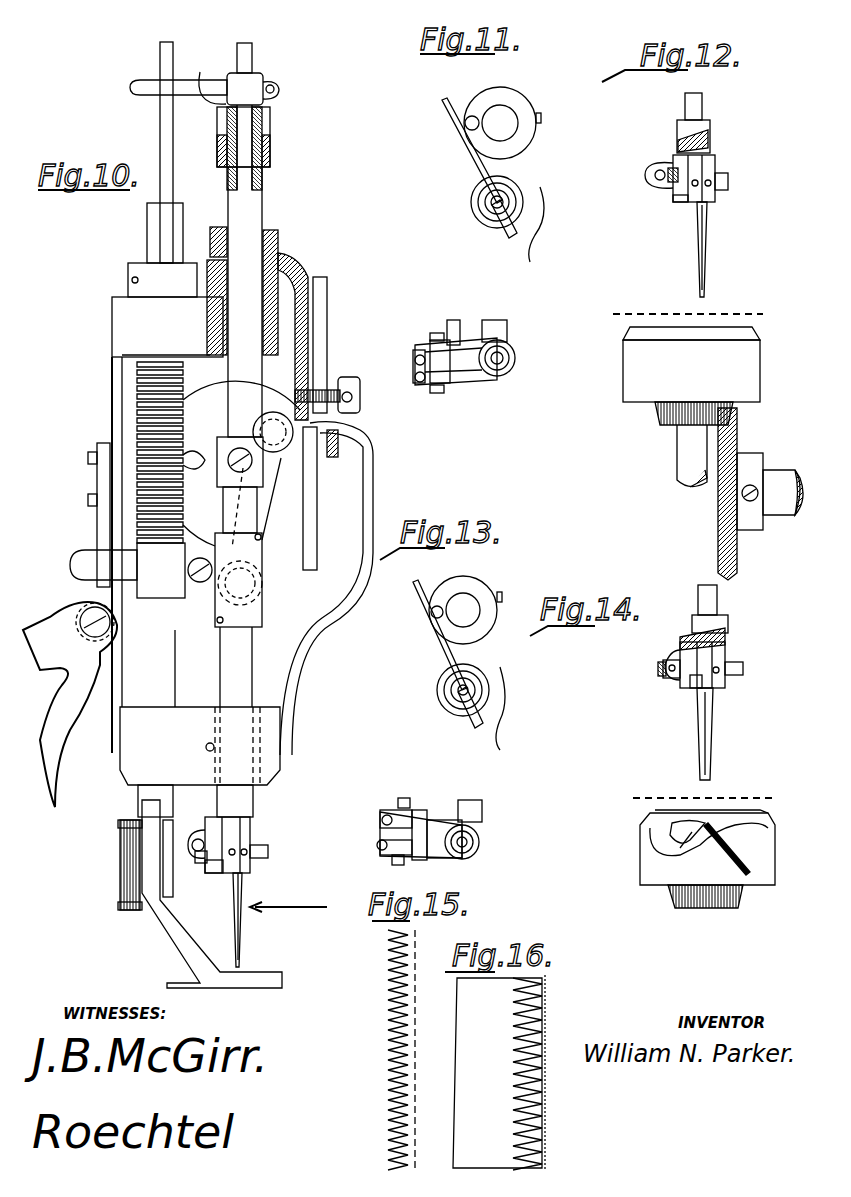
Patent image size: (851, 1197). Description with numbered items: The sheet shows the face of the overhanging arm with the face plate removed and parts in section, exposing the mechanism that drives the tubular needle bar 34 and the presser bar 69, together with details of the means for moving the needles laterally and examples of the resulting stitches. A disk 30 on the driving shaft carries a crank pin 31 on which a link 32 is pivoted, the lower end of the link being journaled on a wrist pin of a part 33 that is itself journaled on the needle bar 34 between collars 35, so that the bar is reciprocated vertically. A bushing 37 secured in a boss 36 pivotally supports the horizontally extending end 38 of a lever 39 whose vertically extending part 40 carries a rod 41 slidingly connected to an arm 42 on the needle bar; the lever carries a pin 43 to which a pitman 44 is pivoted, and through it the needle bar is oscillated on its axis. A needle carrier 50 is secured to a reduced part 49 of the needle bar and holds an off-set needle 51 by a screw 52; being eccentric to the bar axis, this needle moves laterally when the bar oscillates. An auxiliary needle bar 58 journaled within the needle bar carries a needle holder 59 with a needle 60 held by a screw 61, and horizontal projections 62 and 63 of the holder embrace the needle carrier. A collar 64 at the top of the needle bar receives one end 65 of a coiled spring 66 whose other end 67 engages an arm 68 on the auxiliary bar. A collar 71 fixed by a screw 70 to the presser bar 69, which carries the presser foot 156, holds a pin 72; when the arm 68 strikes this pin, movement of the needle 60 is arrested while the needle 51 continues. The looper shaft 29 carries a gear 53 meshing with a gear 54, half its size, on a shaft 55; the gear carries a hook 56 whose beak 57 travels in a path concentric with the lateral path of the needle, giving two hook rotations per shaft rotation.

In FIG. 14, the looper shaft 29 is at (773, 472).
In FIG. 10, the disk 30 is at (218, 454).
In FIG. 10, the crank pin 31 is at (255, 449).
In FIG. 10, the link 32 is at (262, 540).
In FIG. 10, the part 33 is at (235, 585).
In FIG. 10, the tubular needle bar 34 is at (262, 197).
In FIG. 11, the tubular needle bar 34 is at (497, 368).
In FIG. 12, the tubular needle bar 34 is at (710, 135).
In FIG. 14, the tubular needle bar 34 is at (728, 620).
In FIG. 10, the collars 35 is at (220, 525).
In FIG. 10, the boss 36 is at (167, 327).
In FIG. 10, the bushing 37 is at (270, 225).
In FIG. 10, the horizontally extending end 38 is at (280, 253).
In FIG. 10, the lever 39 is at (317, 336).
In FIG. 10, the vertically extending part 40 is at (327, 325).
In FIG. 10, the rod 41 is at (310, 560).
In FIG. 10, the arm 42 is at (262, 503).
In FIG. 10, the pin 43 is at (335, 380).
In FIG. 10, the pitman 44 is at (365, 420).
In FIG. 11, the reduced part 49 is at (515, 358).
In FIG. 13, the reduced part 49 is at (478, 850).
In FIG. 10, the needle carrier 50 is at (225, 808).
In FIG. 12, the needle carrier 50 is at (680, 140).
In FIG. 13, the needle carrier 50 is at (440, 832).
In FIG. 14, the needle carrier 50 is at (725, 632).
In FIG. 10, the needle 51 is at (233, 907).
In FIG. 12, the needle 51 is at (697, 232).
In FIG. 13, the needle 51 is at (380, 818).
In FIG. 14, the needle 51 is at (697, 732).
In FIG. 10, the screw 52 is at (193, 861).
In FIG. 12, the screw 52 is at (658, 185).
In FIG. 13, the screw 52 is at (398, 800).
In FIG. 14, the screw 52 is at (658, 668).
In FIG. 14, the gear 53 is at (740, 553).
In FIG. 14, the gear 54 is at (655, 420).
In FIG. 14, the shaft 55 is at (680, 462).
In FIG. 14, the hook 56 is at (691, 364).
In FIG. 14, the beak 57 is at (707, 847).
In FIG. 10, the auxiliary needle bar 58 is at (252, 58).
In FIG. 11, the auxiliary needle bar 58 is at (505, 195).
In FIG. 12, the auxiliary needle bar 58 is at (702, 100).
In FIG. 13, the auxiliary needle bar 58 is at (472, 680).
In FIG. 14, the auxiliary needle bar 58 is at (698, 592).
In FIG. 10, the needle holder 59 is at (250, 838).
In FIG. 11, the needle holder 59 is at (463, 385).
In FIG. 12, the needle holder 59 is at (715, 162).
In FIG. 13, the needle holder 59 is at (432, 858).
In FIG. 14, the needle holder 59 is at (725, 655).
In FIG. 10, the needle 60 is at (242, 925).
In FIG. 12, the needle 60 is at (708, 245).
In FIG. 13, the needle 60 is at (380, 840).
In FIG. 14, the needle 60 is at (713, 733).
In FIG. 10, the screw 61 is at (268, 855).
In FIG. 12, the screw 61 is at (728, 188).
In FIG. 13, the screw 61 is at (392, 862).
In FIG. 14, the screw 61 is at (743, 668).
In FIG. 11, the horizontal projection 62 is at (450, 340).
In FIG. 12, the horizontal projection 62 is at (670, 160).
In FIG. 13, the horizontal projection 62 is at (420, 812).
In FIG. 14, the horizontal projection 62 is at (680, 645).
In FIG. 10, the horizontal projection 63 is at (210, 868).
In FIG. 11, the horizontal projection 63 is at (460, 325).
In FIG. 12, the horizontal projection 63 is at (672, 200).
In FIG. 14, the horizontal projection 63 is at (692, 688).
In FIG. 10, the collar 64 is at (270, 150).
In FIG. 10, the end 65 is at (262, 133).
In FIG. 11, the end 65 is at (471, 203).
In FIG. 13, the end 65 is at (437, 700).
In FIG. 10, the coiled spring 66 is at (265, 105).
In FIG. 11, the coiled spring 66 is at (520, 195).
In FIG. 13, the coiled spring 66 is at (488, 672).
In FIG. 10, the end 67 is at (200, 72).
In FIG. 11, the end 67 is at (470, 165).
In FIG. 13, the end 67 is at (445, 655).
In FIG. 10, the arm 68 is at (130, 87).
In FIG. 11, the arm 68 is at (442, 102).
In FIG. 13, the arm 68 is at (413, 582).
In FIG. 10, the presser bar 69 is at (183, 205).
In FIG. 11, the presser bar 69 is at (500, 123).
In FIG. 13, the presser bar 69 is at (463, 610).
In FIG. 10, the screw 70 is at (125, 283).
In FIG. 11, the screw 70 is at (541, 120).
In FIG. 13, the screw 70 is at (502, 597).
In FIG. 10, the collar 71 is at (148, 275).
In FIG. 11, the collar 71 is at (505, 100).
In FIG. 13, the collar 71 is at (470, 590).
In FIG. 10, the pin 72 is at (160, 135).
In FIG. 11, the pin 72 is at (468, 112).
In FIG. 13, the pin 72 is at (433, 618).
In FIG. 10, the presser foot 156 is at (180, 925).